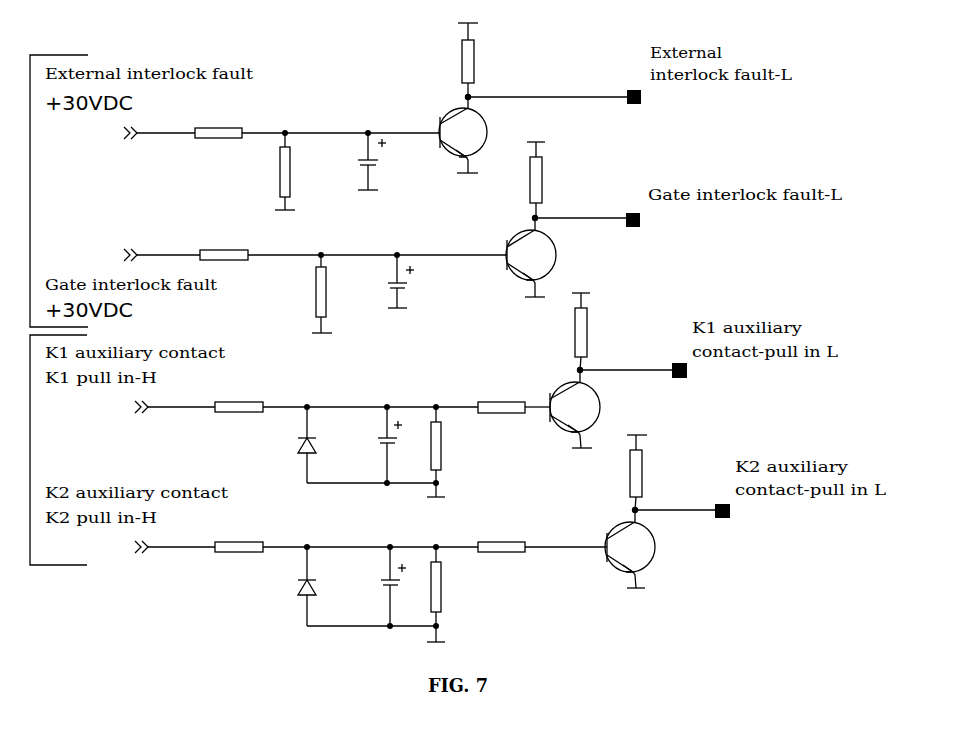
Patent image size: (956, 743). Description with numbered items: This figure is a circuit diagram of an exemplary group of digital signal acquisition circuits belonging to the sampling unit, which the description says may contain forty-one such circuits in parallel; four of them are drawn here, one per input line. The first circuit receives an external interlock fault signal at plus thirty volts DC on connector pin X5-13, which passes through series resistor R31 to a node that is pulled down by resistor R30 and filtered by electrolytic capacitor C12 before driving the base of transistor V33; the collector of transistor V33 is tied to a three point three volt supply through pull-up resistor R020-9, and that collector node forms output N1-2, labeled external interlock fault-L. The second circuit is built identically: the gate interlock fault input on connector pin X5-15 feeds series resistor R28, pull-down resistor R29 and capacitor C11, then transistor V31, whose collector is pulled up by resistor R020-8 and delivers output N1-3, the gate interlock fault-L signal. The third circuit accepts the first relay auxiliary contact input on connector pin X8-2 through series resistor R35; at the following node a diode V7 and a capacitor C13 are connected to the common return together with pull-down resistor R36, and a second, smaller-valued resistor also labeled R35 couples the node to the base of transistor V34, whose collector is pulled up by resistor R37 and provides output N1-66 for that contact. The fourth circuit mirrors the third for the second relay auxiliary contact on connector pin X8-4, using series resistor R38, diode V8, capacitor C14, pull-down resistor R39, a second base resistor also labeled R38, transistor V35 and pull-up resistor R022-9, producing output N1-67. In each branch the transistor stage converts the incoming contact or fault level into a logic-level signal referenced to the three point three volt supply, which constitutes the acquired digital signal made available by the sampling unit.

The external interlock fault input connector pin X5-13 is at (93, 133).
The 30K input resistor R31 is at (219, 111).
The 10K pull-down resistor R30 is at (269, 171).
The 1u filter capacitor C12 is at (351, 161).
The 2N2222 transistor V33 is at (443, 148).
The 10K pull-up resistor R020-9 is at (500, 48).
The external interlock fault-L output (PE3) N1-2 is at (612, 97).
The gate interlock fault input connector pin X5-15 is at (93, 256).
The 30K input resistor R28 is at (225, 231).
The 10K pull-down resistor R29 is at (305, 294).
The 1u filter capacitor C11 is at (380, 281).
The 2N2222 transistor V31 is at (494, 261).
The 10K pull-up resistor R020-8 is at (569, 168).
The gate interlock fault-L output (PE4) N1-3 is at (646, 220).
The K1 auxiliary contact input connector pin X8-2 is at (107, 408).
The 7.5K / 1K resistor R35 is at (372, 386).
The 1N4148 diode V7 is at (269, 445).
The 4.7u filter capacitor C13 is at (367, 445).
The 6.2K pull-down resistor R36 is at (461, 445).
The 2N2222 transistor V34 is at (555, 423).
The 10K pull-up resistor R37 is at (594, 321).
The K1 auxiliary contact-pull in L output (PG0) N1-66 is at (701, 373).
The K2 auxiliary contact input connector pin X8-4 is at (107, 548).
The 7.5K / 1K resistor R38 is at (374, 526).
The 1N4148 diode V8 is at (272, 586).
The 4.7u filter capacitor C14 is at (374, 586).
The 6.2K pull-down resistor R39 is at (462, 586).
The 2N2222 transistor V35 is at (597, 556).
The 10K pull-up resistor R022-9 is at (667, 461).
The K2 auxiliary contact-pull in L output (PG1) N1-67 is at (750, 515).